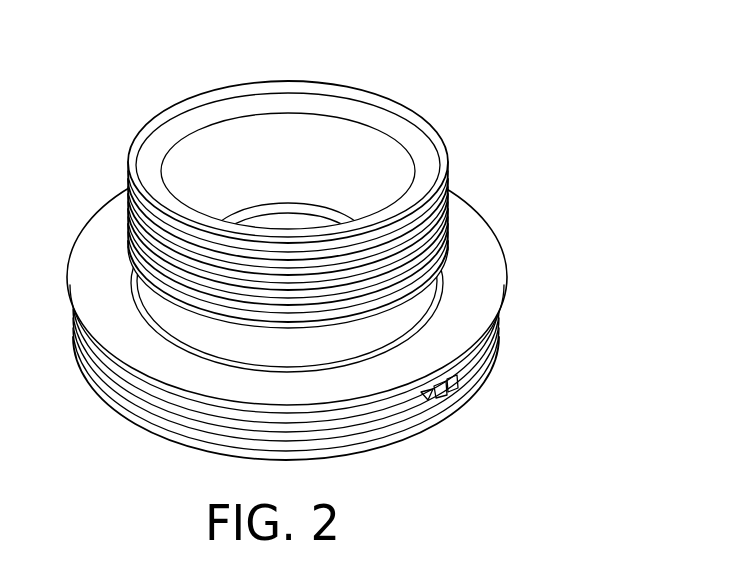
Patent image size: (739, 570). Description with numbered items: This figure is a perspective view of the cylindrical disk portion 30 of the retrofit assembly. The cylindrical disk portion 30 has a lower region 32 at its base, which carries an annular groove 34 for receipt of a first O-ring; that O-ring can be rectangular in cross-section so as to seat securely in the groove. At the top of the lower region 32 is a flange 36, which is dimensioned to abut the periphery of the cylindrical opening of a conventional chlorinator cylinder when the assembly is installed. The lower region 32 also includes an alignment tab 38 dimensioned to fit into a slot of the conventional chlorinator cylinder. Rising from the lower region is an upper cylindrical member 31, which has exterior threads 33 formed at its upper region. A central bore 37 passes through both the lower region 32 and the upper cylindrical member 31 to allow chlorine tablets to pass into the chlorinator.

The cylindrical disk portion 30 is at (450, 68).
The upper cylindrical member 31 is at (320, 164).
The lower region 32 is at (319, 343).
The exterior threads 33 is at (448, 216).
The annular groove 34 is at (185, 412).
The flange 36 is at (506, 295).
The central bore 37 is at (282, 122).
The alignment tab 38 is at (455, 379).